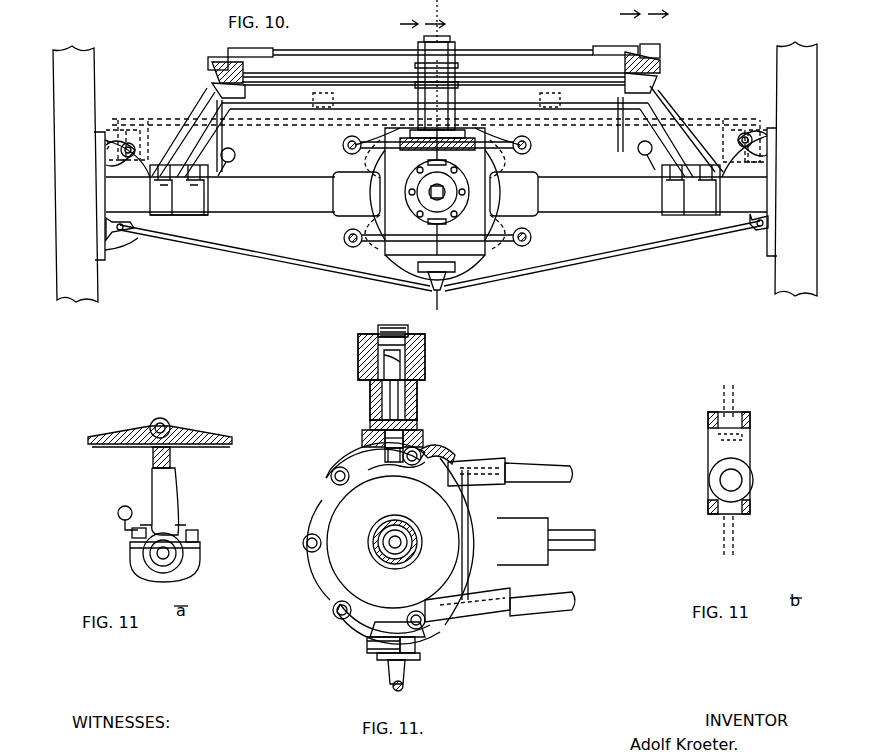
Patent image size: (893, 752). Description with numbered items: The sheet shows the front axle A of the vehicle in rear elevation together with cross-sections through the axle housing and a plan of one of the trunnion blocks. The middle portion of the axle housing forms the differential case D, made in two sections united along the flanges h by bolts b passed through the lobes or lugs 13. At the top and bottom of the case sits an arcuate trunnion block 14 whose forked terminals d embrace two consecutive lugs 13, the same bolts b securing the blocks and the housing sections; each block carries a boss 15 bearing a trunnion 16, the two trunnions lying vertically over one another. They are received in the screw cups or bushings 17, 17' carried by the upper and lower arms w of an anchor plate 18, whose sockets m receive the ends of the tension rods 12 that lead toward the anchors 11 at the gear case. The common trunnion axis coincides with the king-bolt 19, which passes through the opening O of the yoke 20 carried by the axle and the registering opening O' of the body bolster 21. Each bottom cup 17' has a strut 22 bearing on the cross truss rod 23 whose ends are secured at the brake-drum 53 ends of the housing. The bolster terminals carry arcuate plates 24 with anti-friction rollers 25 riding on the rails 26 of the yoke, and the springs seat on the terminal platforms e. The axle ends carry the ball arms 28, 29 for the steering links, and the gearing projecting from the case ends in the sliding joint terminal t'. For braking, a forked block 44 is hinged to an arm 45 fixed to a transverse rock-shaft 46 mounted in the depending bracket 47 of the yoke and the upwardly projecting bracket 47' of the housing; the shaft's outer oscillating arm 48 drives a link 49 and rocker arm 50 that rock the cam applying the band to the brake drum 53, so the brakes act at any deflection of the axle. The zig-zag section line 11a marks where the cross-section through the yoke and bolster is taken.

In FIG. 10, the anchor 11 is at (438, 314).
In FIG. 10, the section line 11a— 11a is at (662, 203).
In FIG. 10, the truss or tension rods 12 is at (343, 147).
In FIG. 11, the truss or tension rods 12 is at (552, 466).
In FIG. 11, the lobes or lugs 13 is at (306, 552).
In FIG. 11B, the lobes or lugs 13 is at (748, 434).
In FIG. 11, the trunnion block 14 is at (360, 465).
In FIG. 11B, the trunnion block 14 is at (750, 452).
In FIG. 11, the boss 15 is at (392, 468).
In FIG. 11B, the boss 15 is at (754, 482).
In FIG. 11, the trunnion 16 is at (410, 434).
In FIG. 11B, the trunnion 16 is at (722, 481).
In FIG. 10, the upper screw cup or bushing 17 is at (437, 131).
In FIG. 11, the upper screw cup or bushing 17 is at (382, 427).
In FIG. 10, the bottom bushing or cup 17' is at (464, 279).
In FIG. 11, the bottom bushing or cup 17' is at (405, 653).
In FIG. 10, the anchor plate or frame 18 is at (525, 152).
In FIG. 11, the anchor plate or frame 18 is at (490, 510).
In FIG. 10, the king-bolt 19 is at (478, 22).
In FIG. 11, the king-bolt 19 is at (380, 326).
In FIG. 10, the yoke 20 is at (352, 85).
In FIG. 11, the yoke 20 is at (420, 408).
In FIG. 11A, the yoke 20 is at (168, 492).
In FIG. 10, the body bolster 21 is at (510, 50).
In FIG. 11, the body bolster 21 is at (425, 352).
In FIG. 10, the strut or projection 22 is at (450, 285).
In FIG. 11, the strut or projection 22 is at (390, 676).
In FIG. 10, the cross tension or truss rod 23 is at (250, 264).
In FIG. 11, the cross tension or truss rod 23 is at (392, 690).
In FIG. 10, the arcuate plates 24 is at (212, 70).
In FIG. 11A, the arcuate plates 24 is at (222, 432).
In FIG. 10, the anti-friction rollers 25 is at (208, 60).
In FIG. 11A, the anti-friction rollers 25 is at (150, 424).
In FIG. 10, the arcuate plates or rails 26 is at (212, 90).
In FIG. 11A, the arcuate plates or rails 26 is at (130, 448).
In FIG. 10, the ball arm 28 is at (236, 150).
In FIG. 10, the ball arm 29 is at (643, 141).
In FIG. 11A, the ball arm 29 is at (118, 514).
In FIG. 10, the forked block 44 is at (282, 222).
In FIG. 10, the arm 45 is at (580, 160).
In FIG. 10, the rock-shaft 46 is at (411, 134).
In FIG. 10, the depending bracket 47 is at (436, 88).
In FIG. 10, the upwardly projecting bracket 47' is at (433, 115).
In FIG. 10, the oscillating arm 48 is at (134, 115).
In FIG. 10, the link 49 is at (95, 158).
In FIG. 10, the oscillating or rocker arm 50 is at (95, 192).
In FIG. 10, the brake drum 53 is at (104, 240).
In FIG. 10, the front axle A is at (300, 200).
In FIG. 11, the front axle A is at (393, 556).
In FIG. 11A, the front axle A is at (135, 560).
In FIG. 10, the front differential case or housing D is at (470, 255).
In FIG. 11, the front differential case or housing D is at (335, 584).
In FIG. 11, the bolts b is at (331, 476).
In FIG. 11B, the forked terminals d is at (710, 412).
In FIG. 10, the terminal platforms e is at (236, 47).
In FIG. 11, the flanges h is at (322, 522).
In FIG. 10, the sockets m is at (530, 140).
In FIG. 11, the sockets m is at (470, 458).
In FIG. 10, the sliding joint terminal t' is at (393, 194).
In FIG. 11, the sliding joint terminal t' is at (546, 531).
In FIG. 11, the terminals or arms w is at (364, 440).
In FIG. 11, the opening of the yoke O is at (411, 400).
In FIG. 11, the registering opening of the body bolster O' is at (368, 357).